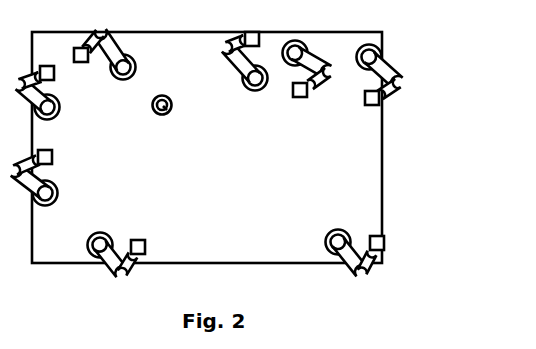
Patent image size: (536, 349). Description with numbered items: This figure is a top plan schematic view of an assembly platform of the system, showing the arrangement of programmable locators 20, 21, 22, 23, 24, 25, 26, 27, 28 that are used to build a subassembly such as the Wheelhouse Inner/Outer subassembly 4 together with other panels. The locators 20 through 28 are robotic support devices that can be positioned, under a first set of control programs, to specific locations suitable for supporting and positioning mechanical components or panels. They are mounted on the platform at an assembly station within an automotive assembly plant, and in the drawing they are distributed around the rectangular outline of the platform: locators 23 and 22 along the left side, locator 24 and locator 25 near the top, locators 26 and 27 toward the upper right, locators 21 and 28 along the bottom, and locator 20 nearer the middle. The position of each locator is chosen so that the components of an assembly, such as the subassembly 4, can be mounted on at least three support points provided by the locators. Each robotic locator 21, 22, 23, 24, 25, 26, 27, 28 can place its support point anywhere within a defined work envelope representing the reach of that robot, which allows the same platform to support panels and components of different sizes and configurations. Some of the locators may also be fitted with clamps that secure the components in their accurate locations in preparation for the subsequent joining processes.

The Wheelhouse Inner/Outer subassembly 4 is at (330, 43).
The programmable locator 20 is at (166, 112).
The programmable locator 21 is at (107, 244).
The programmable locator 22 is at (33, 187).
The programmable locator 23 is at (42, 106).
The programmable locator 24 is at (127, 60).
The programmable locator 25 is at (233, 60).
The programmable locator 26 is at (307, 58).
The programmable locator 27 is at (373, 63).
The programmable locator 28 is at (347, 255).